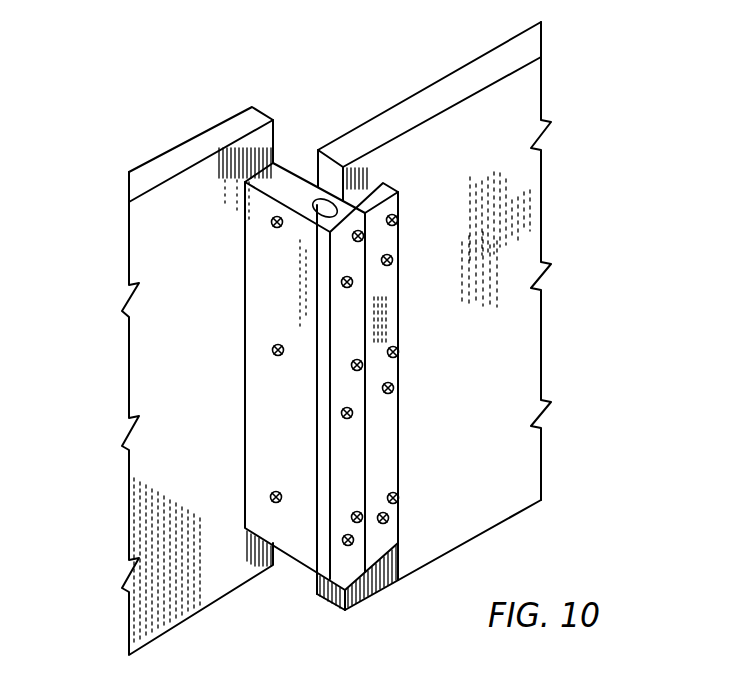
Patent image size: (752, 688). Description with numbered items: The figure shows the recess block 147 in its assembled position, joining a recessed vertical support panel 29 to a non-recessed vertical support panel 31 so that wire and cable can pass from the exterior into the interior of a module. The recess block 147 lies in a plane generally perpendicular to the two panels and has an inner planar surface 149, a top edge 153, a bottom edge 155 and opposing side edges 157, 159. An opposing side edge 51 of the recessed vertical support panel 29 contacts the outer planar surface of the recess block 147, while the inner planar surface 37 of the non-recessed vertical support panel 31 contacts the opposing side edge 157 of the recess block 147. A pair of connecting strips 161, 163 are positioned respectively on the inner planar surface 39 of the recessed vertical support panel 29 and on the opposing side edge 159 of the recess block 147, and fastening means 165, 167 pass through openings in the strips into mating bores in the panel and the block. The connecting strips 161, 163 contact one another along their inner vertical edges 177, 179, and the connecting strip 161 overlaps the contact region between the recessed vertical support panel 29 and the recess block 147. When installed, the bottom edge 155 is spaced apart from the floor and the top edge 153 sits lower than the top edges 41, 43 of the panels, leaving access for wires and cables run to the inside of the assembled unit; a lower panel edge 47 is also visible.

The recessed vertical support panel 29 is at (556, 73).
The non-recessed vertical support panel 31 is at (147, 98).
The inner planar surface 37 is at (167, 311).
The inner planar surface 39 is at (523, 190).
The top edge 41 is at (210, 137).
The top edge 43 is at (445, 97).
The bottom edge of right panel 47 is at (496, 520).
The opposing side edge 51 is at (327, 174).
The recess block 147 is at (267, 380).
The inner planar surface 149 is at (263, 473).
The top edge 153 is at (283, 185).
The bottom edge 155 is at (293, 563).
The opposing side edge 157 is at (246, 508).
The opposing side edge 159 is at (313, 211).
The connecting strip 161 is at (385, 282).
The connecting strip 163 is at (342, 320).
The fastening means 165 is at (404, 219).
The fastening means 167 is at (354, 241).
The inner vertical edge 177 is at (358, 425).
The inner vertical edge 179 is at (370, 402).